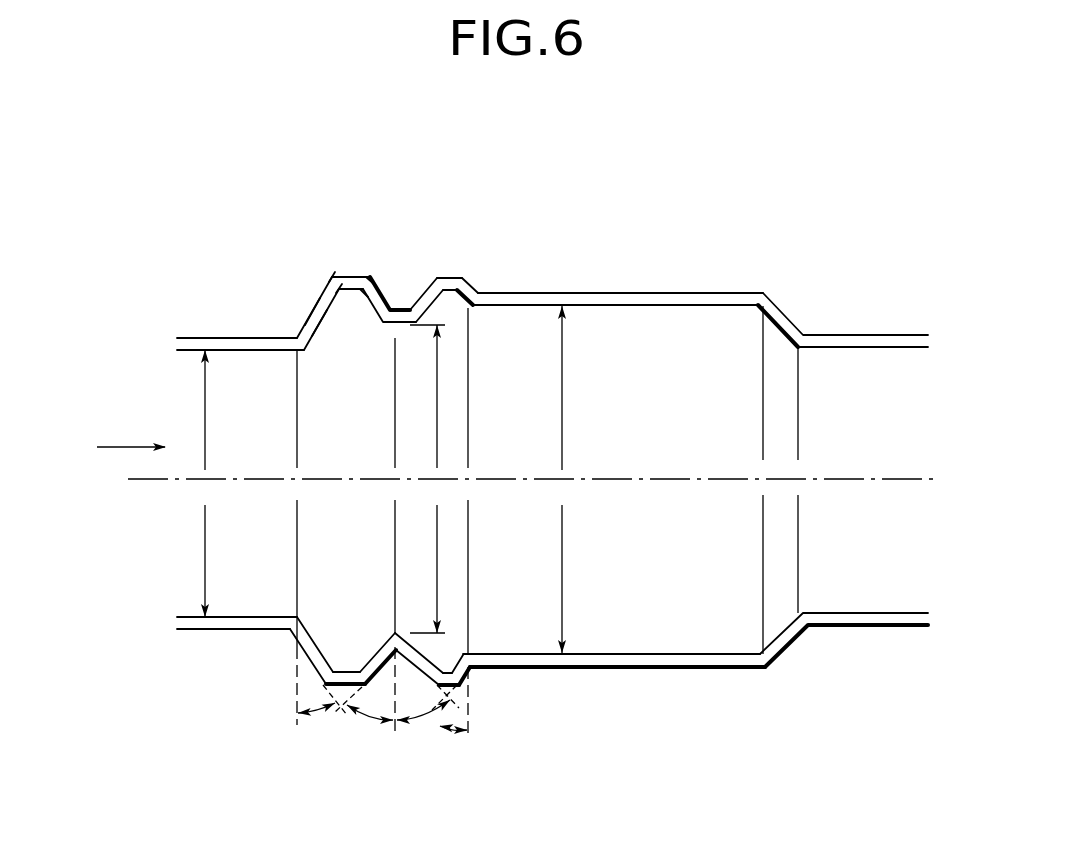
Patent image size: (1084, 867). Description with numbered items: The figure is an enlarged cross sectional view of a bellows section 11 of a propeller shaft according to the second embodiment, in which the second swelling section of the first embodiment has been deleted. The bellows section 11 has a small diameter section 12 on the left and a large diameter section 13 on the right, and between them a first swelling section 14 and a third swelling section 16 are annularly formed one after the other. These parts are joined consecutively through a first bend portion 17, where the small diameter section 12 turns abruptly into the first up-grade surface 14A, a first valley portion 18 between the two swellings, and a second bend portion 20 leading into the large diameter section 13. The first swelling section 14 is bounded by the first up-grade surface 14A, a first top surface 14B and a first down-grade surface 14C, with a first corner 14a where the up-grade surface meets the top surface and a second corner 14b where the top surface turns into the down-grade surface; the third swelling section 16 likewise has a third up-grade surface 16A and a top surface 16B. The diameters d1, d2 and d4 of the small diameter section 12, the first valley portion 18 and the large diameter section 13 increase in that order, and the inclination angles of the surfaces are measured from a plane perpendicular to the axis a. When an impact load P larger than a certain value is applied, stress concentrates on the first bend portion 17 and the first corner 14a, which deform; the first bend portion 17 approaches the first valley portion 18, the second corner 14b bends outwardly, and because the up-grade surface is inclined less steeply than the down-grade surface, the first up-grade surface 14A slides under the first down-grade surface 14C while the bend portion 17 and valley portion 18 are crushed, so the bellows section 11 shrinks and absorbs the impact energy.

The bellows section 11 is at (769, 396).
The small diameter section 12 is at (222, 338).
The large diameter section 13 is at (685, 293).
The first swelling section 14 is at (347, 414).
The first corner 14a is at (330, 274).
The second corner 14b is at (367, 280).
The first up-grade surface 14A is at (308, 287).
The first top surface 14B is at (345, 273).
The first down-grade surface 14C is at (360, 301).
The third swelling section 16 is at (517, 415).
The third up-grade surface 16A is at (422, 287).
The third top surface 16B is at (470, 277).
The first bend portion 17 is at (295, 336).
The first valley portion 18 is at (390, 328).
The second bend portion 20 is at (478, 291).
The impact load P is at (131, 431).
The axis a is at (877, 478).
The diameter of the small diameter section d1 is at (202, 483).
The diameter of the first valley portion d2 is at (431, 479).
The diameter of the large diameter section d4 is at (557, 479).